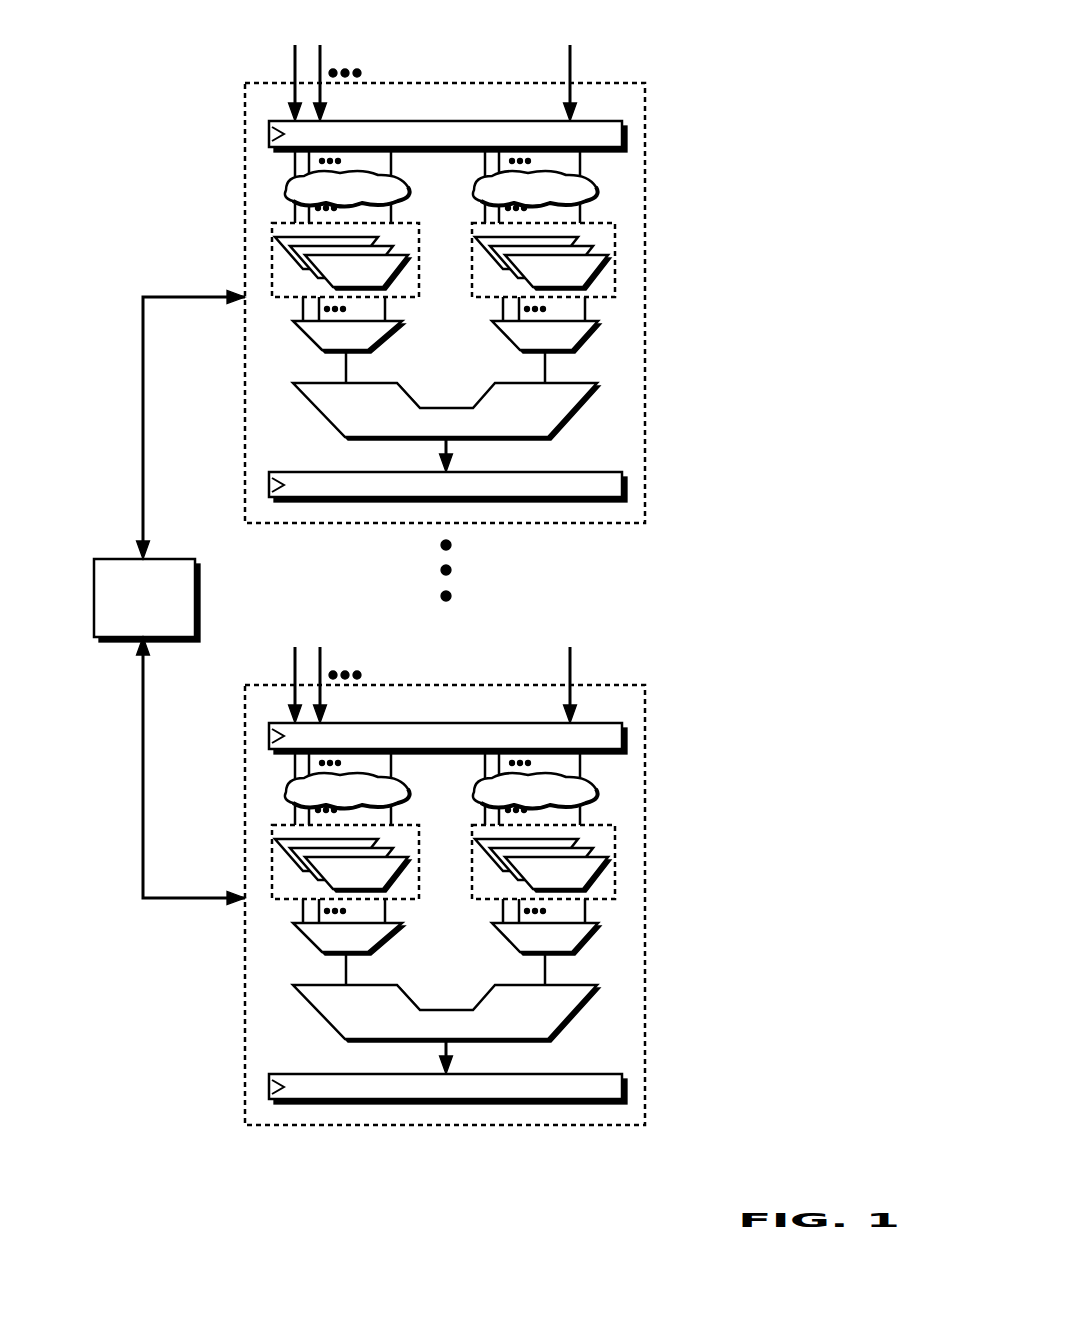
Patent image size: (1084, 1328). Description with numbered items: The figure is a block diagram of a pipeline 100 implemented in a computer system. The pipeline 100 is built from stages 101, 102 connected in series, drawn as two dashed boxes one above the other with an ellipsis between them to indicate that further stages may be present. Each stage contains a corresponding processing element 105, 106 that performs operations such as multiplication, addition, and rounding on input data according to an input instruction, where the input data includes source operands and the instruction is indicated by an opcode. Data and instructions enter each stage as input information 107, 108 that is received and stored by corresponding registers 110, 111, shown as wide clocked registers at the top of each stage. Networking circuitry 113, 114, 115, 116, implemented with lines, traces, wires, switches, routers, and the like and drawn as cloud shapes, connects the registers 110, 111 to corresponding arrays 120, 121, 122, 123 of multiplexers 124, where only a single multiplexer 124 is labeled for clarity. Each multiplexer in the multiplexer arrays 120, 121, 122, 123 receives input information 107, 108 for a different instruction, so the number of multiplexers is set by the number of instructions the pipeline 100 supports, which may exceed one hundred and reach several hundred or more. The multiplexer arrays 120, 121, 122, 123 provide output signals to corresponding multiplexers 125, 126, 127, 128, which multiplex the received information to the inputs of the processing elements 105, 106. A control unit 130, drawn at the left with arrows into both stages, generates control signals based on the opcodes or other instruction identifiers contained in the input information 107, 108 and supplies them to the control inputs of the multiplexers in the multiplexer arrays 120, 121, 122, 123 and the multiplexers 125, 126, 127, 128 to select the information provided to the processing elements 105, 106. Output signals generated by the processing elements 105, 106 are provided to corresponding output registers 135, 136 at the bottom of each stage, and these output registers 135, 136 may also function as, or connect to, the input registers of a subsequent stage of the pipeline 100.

The pipeline 100 is at (504, 678).
The stage 101 is at (245, 118).
The stage 102 is at (447, 905).
The processing element 105 is at (384, 418).
The processing element 106 is at (446, 1013).
The input information 107 is at (612, 72).
The input information 108 is at (478, 679).
The register 110 is at (627, 135).
The register 111 is at (485, 726).
The networking circuitry 113 is at (360, 197).
The networking circuitry 114 is at (548, 197).
The networking circuitry 115 is at (347, 791).
The networking circuitry 116 is at (535, 791).
The multiplexer array 120 is at (272, 253).
The multiplexer array 121 is at (617, 248).
The multiplexer array 122 is at (300, 841).
The multiplexer array 123 is at (592, 848).
The multiplexer 124 is at (371, 279).
The multiplexer 125 is at (359, 344).
The multiplexer 126 is at (559, 344).
The multiplexer 127 is at (349, 939).
The multiplexer 128 is at (546, 939).
The control unit 130 is at (130, 619).
The output register 135 is at (627, 483).
The output register 136 is at (490, 1070).